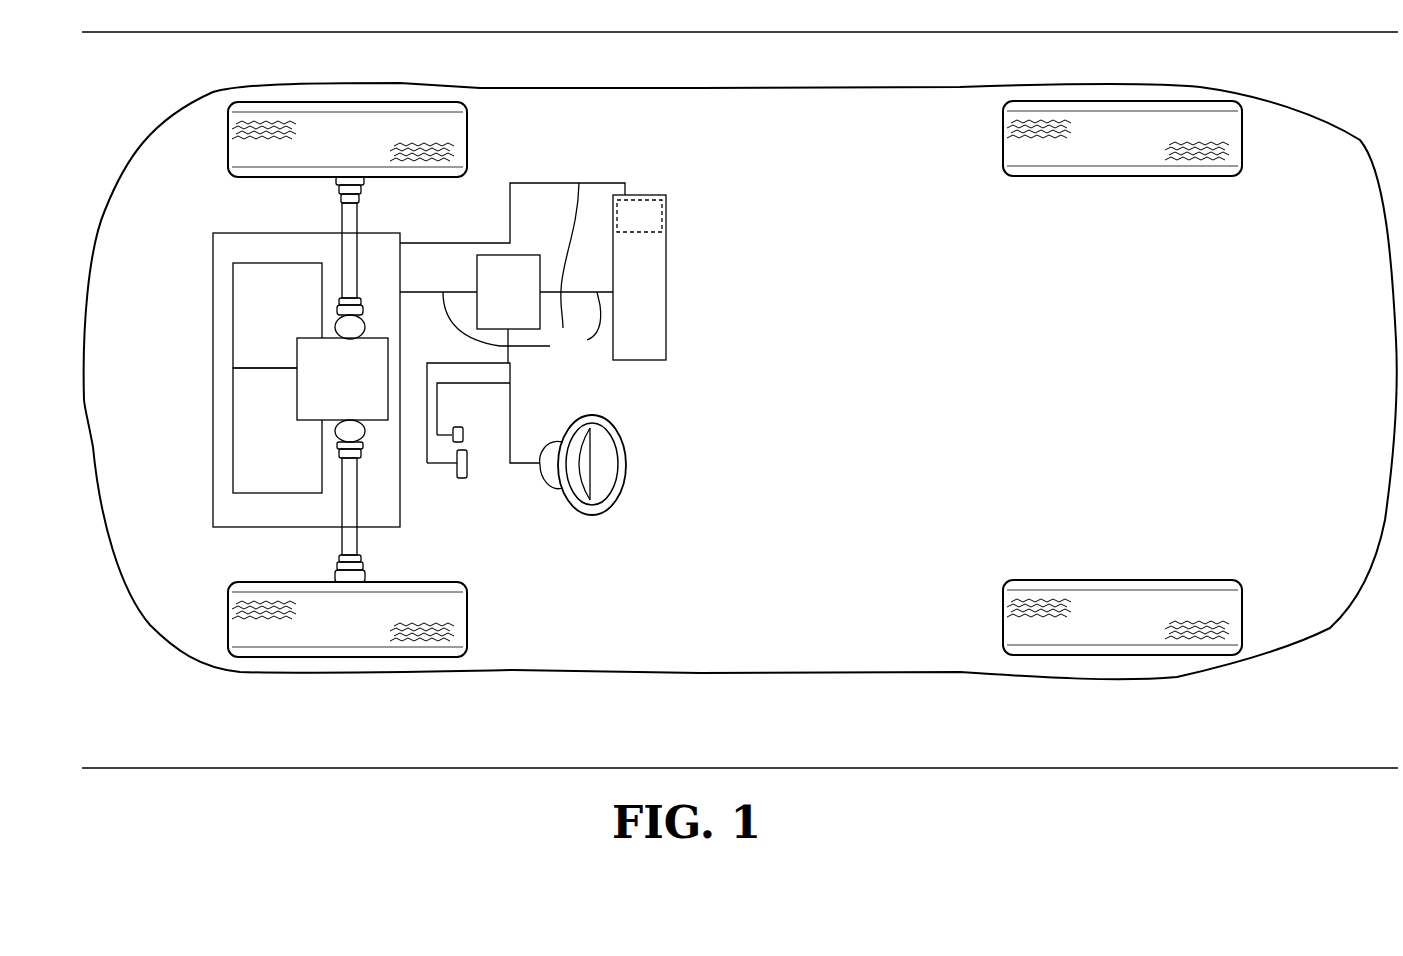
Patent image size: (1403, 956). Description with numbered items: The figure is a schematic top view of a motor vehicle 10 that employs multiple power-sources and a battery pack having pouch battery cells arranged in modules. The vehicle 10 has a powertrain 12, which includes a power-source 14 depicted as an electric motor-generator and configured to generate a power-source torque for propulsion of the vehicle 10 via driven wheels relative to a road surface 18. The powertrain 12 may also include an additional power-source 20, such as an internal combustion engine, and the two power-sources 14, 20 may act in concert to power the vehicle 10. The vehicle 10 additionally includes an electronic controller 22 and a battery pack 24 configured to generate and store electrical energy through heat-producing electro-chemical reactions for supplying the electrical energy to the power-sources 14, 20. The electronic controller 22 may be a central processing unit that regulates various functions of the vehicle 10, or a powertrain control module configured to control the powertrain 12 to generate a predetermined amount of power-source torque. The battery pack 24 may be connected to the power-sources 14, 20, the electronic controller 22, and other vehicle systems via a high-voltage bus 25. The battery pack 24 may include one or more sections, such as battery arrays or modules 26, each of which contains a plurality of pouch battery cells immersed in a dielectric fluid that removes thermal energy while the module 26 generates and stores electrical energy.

The motor vehicle 10 is at (687, 676).
The powertrain 12 is at (362, 379).
The power-source 14 is at (277, 315).
The road surface 18 is at (1282, 703).
The additional power-source 20 is at (277, 430).
The electronic controller 22 is at (508, 292).
The battery pack 24 is at (639, 277).
The high-voltage BUS 25 is at (522, 324).
The battery module 26 is at (662, 212).